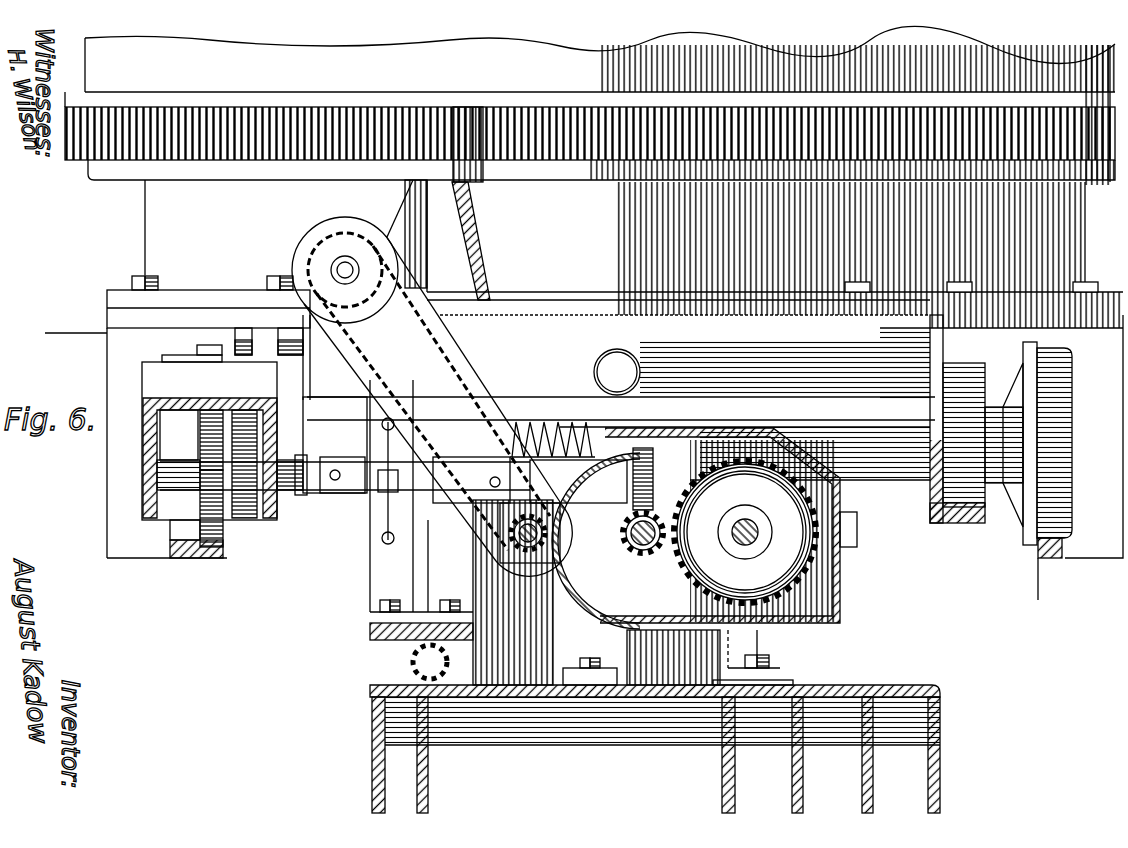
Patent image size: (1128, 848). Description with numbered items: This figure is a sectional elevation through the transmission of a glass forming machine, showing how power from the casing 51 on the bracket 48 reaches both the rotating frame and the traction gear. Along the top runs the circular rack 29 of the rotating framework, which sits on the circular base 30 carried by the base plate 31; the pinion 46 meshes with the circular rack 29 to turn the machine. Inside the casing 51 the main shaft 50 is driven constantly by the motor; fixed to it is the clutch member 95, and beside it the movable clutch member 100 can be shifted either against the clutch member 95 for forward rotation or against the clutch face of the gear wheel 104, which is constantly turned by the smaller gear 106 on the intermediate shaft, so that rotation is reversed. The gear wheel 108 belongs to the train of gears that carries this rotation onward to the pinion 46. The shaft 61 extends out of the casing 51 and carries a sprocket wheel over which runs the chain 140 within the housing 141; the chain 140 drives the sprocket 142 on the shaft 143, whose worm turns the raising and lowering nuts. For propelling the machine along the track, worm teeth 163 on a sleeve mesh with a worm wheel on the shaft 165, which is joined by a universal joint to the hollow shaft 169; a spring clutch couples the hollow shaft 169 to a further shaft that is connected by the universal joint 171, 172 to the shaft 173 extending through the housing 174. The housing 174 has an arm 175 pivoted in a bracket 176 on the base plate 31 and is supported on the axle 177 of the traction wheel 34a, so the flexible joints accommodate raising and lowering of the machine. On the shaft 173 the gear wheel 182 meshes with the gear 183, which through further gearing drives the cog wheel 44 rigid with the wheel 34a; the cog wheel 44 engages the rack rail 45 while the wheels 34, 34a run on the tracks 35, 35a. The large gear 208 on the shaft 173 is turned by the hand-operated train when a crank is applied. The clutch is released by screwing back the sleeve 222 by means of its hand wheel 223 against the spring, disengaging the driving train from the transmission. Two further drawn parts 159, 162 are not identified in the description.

The circular rack 29 is at (370, 122).
The pinion 46 is at (462, 130).
The circular base 30 is at (165, 202).
The base plate 31 is at (118, 298).
The arm 175 is at (258, 338).
The bracket 176 is at (288, 338).
The sprocket 142 is at (345, 236).
The housing 141 is at (470, 385).
The shaft 143 is at (352, 280).
The chain 140 is at (347, 356).
The housing 174 is at (148, 412).
The gear 183 is at (250, 420).
The large gear 208 is at (212, 430).
The cog wheel 44 is at (225, 526).
The rack rail 45 is at (224, 545).
The shaft 173 is at (162, 472).
The traction wheel 34a is at (173, 520).
The track 35a is at (183, 552).
The gear wheel 182 is at (244, 468).
The knuckle 172 is at (300, 500).
The universal joint knuckle 171 is at (342, 498).
The hand wheel 223 is at (361, 524).
The sleeve 222 is at (388, 546).
The clutch member 162 is at (467, 468).
The hollow shaft 169 is at (458, 520).
The bracket 159 is at (525, 565).
The shaft 165 is at (605, 492).
The casing 51 is at (841, 590).
The shaft 61 is at (552, 530).
The movable clutch member 100 is at (735, 604).
The clutch member 95 is at (802, 560).
The main shaft 50 is at (740, 522).
The gear wheel 104 is at (645, 450).
The gear 106 is at (648, 556).
The worm teeth 163 is at (632, 540).
The gear wheel 108 is at (448, 657).
The bracket 48 is at (838, 686).
The axle 177 is at (850, 432).
The wheel 34 is at (1062, 488).
The track 35 is at (1058, 560).